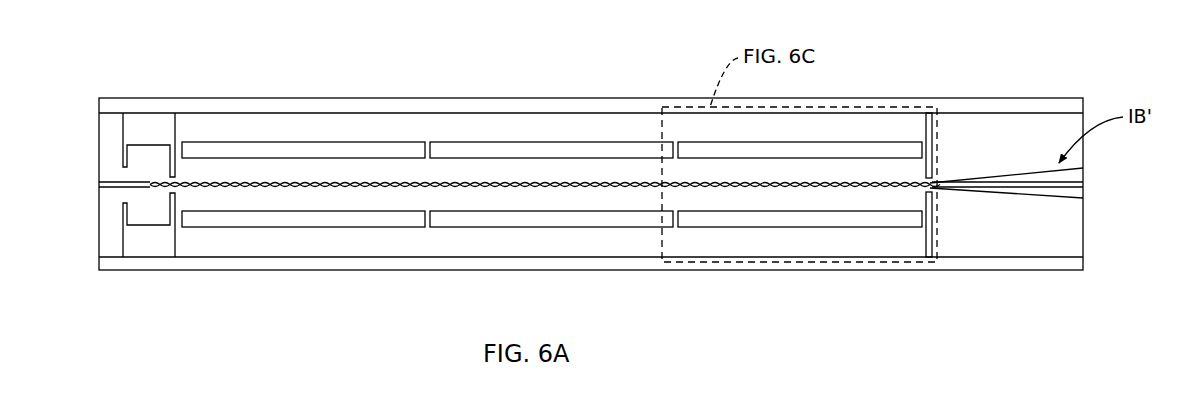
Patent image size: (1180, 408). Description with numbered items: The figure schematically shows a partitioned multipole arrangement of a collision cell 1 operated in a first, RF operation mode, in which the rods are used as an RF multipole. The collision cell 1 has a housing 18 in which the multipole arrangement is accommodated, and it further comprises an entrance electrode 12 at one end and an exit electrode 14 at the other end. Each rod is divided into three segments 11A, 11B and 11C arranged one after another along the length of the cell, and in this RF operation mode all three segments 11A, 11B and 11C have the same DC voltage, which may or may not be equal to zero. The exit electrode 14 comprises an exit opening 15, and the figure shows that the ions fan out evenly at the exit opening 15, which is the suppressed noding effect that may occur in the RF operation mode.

The collision cell 1 is at (641, 49).
The housing 18 is at (218, 99).
The entrance electrode 12 is at (173, 245).
The first segment 11A is at (320, 227).
The second segment 11B is at (475, 227).
The third segment 11C is at (787, 227).
The exit electrode 14 is at (923, 235).
The exit opening 15 is at (920, 176).